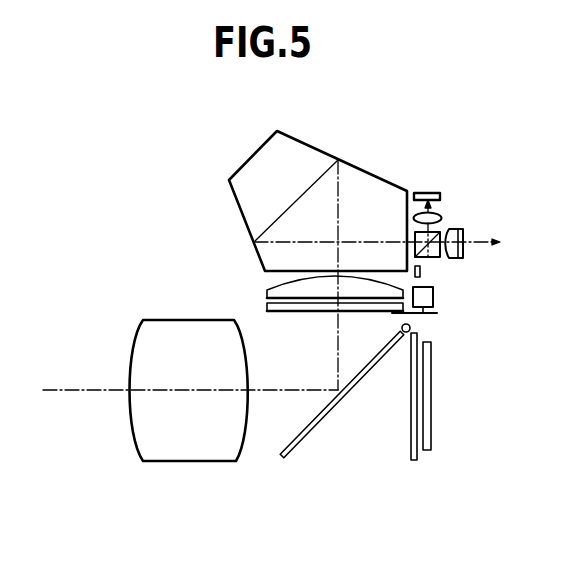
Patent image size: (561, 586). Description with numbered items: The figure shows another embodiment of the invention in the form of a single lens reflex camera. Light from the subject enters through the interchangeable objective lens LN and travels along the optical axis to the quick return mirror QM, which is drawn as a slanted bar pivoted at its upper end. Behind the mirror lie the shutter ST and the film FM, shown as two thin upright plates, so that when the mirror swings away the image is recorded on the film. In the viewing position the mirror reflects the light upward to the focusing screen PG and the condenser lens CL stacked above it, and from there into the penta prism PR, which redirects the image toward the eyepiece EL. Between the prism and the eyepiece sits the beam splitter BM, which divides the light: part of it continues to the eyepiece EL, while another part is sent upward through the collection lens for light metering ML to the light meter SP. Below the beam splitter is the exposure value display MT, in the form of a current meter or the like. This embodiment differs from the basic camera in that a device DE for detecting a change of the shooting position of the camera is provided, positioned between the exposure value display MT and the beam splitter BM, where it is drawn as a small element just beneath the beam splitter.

The penta prism PR is at (306, 147).
The light meter SP is at (423, 192).
The collection lens for light metering ML is at (438, 213).
The eyepiece EL is at (462, 230).
The beam splitter BM is at (440, 257).
The device for detecting a change of the shooting position DE is at (420, 272).
The exposure value display MT is at (433, 300).
The condenser lens CL is at (269, 291).
The focusing screen PG is at (297, 311).
The interchangeable objective lens LN is at (183, 455).
The quick return mirror QM is at (305, 438).
The shutter ST is at (410, 440).
The film FM is at (431, 427).